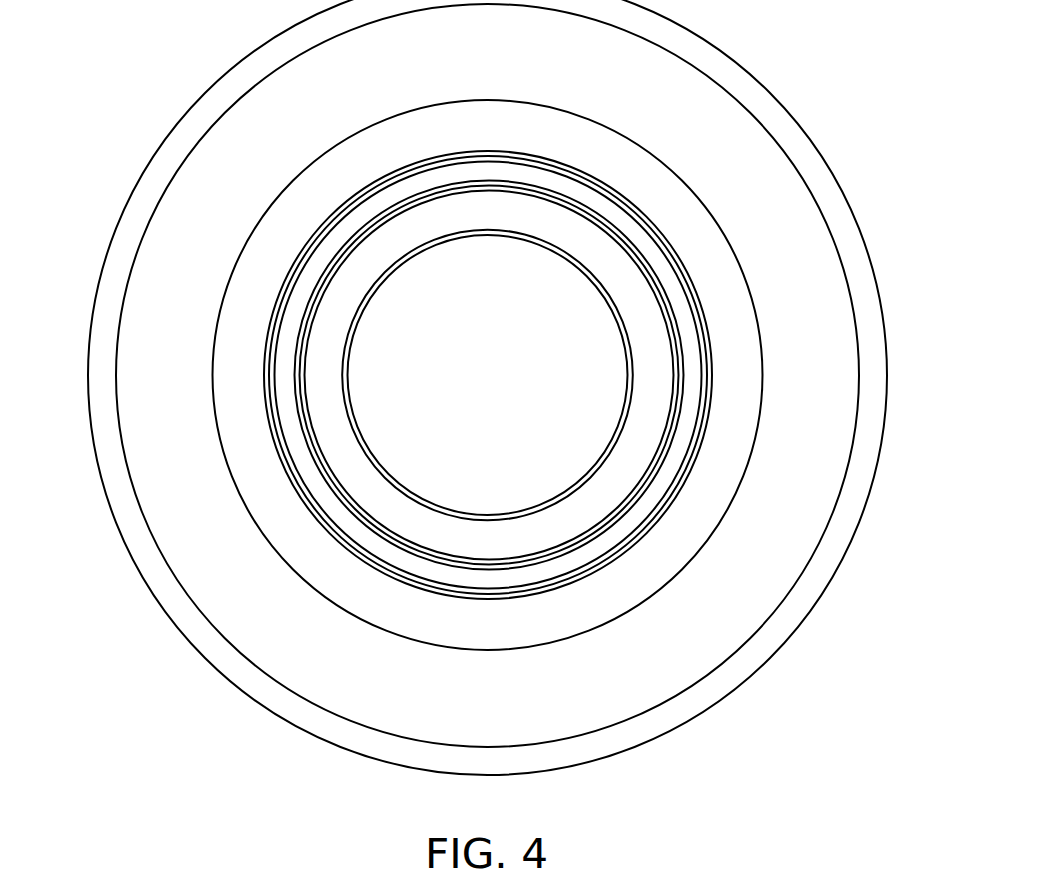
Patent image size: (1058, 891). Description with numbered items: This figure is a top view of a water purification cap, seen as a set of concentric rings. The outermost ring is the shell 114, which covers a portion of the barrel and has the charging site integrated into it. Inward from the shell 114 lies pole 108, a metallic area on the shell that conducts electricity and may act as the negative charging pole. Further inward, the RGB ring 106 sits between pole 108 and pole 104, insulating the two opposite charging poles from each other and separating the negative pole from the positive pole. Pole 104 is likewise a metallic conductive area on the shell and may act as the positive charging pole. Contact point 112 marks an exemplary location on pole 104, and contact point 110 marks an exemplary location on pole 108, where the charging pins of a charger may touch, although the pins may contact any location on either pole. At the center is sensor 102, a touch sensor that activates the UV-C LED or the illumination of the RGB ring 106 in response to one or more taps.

The sensor 102 is at (618, 362).
The pole 104 is at (658, 407).
The RGB ring 106 is at (672, 461).
The pole 108 is at (665, 561).
The contact point 110 is at (328, 375).
The contact point 112 is at (248, 375).
The shell 114 is at (760, 82).